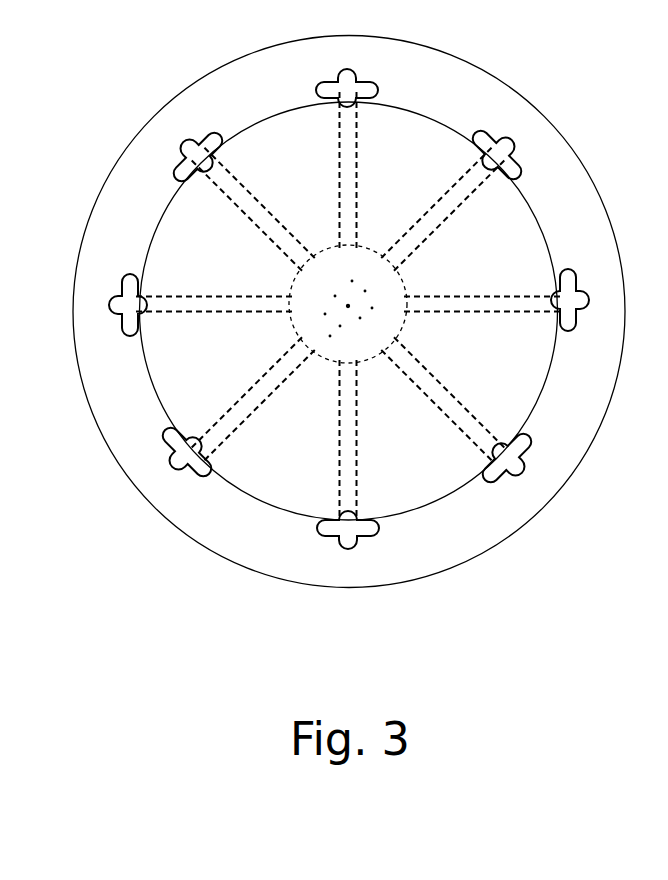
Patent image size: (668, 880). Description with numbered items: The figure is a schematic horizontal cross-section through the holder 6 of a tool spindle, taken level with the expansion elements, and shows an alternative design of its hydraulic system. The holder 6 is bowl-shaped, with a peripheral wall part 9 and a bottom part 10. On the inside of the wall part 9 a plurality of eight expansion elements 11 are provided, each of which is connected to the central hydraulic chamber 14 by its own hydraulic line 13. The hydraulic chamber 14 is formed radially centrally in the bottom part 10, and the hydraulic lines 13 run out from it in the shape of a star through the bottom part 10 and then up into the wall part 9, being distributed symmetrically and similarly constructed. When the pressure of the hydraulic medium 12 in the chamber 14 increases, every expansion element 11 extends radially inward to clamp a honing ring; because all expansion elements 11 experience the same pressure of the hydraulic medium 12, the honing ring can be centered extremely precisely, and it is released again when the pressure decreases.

The holder 6 is at (573, 130).
The peripheral wall part 9 is at (127, 170).
The bottom part 10 is at (203, 402).
The expansion element 11 is at (365, 82).
The hydraulic medium 12 is at (300, 290).
The hydraulic line 13 is at (347, 155).
The hydraulic chamber 14 is at (322, 320).